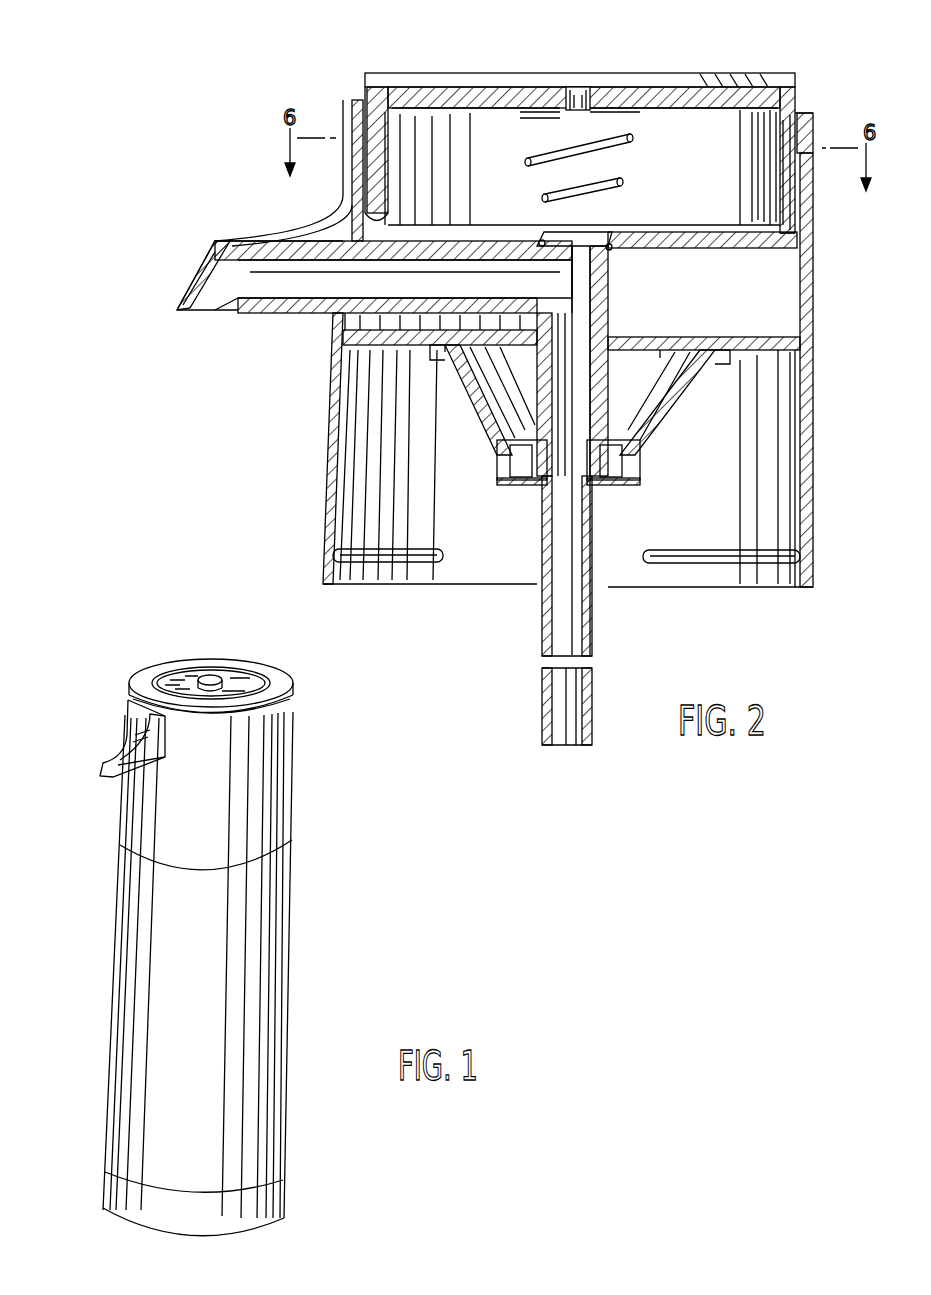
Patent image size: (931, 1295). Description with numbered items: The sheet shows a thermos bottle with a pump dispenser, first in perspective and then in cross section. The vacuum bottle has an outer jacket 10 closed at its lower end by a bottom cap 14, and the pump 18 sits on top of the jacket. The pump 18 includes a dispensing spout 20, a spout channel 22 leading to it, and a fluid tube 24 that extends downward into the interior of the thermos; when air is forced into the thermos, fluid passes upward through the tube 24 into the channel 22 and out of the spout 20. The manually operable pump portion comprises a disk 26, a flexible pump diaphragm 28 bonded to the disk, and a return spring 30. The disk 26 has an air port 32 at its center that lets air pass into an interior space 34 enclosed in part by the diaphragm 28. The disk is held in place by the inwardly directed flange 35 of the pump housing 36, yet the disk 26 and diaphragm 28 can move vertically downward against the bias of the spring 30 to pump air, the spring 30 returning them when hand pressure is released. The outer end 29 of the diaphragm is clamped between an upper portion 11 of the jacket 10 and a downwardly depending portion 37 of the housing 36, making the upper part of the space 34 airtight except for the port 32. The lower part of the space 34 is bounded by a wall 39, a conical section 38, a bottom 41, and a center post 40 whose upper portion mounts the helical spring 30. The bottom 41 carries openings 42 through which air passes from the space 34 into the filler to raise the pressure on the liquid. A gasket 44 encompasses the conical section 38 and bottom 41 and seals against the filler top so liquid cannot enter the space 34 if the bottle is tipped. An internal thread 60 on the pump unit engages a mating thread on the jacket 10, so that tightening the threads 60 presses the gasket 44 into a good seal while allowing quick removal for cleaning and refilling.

In FIG. 1, the outer jacket 10 is at (294, 940).
In FIG. 2, the upper portion of the jacket 11 is at (805, 266).
In FIG. 1, the bottom cap 14 is at (276, 1198).
In FIG. 2, the pump 18 is at (262, 198).
In FIG. 1, the pump 18 is at (308, 740).
In FIG. 2, the dispensing spout 20 is at (185, 278).
In FIG. 1, the dispensing spout 20 is at (104, 760).
In FIG. 2, the spout channel 22 is at (300, 282).
In FIG. 2, the fluid tube 24 is at (540, 638).
In FIG. 2, the disk 26 is at (700, 96).
In FIG. 1, the disk 26 is at (252, 676).
In FIG. 2, the pump diaphragm 28 is at (770, 102).
In FIG. 2, the outer end of the diaphragm 29 is at (805, 178).
In FIG. 2, the return spring 30 is at (640, 185).
In FIG. 2, the air port 32 is at (580, 92).
In FIG. 1, the air port 32 is at (208, 676).
In FIG. 2, the interior space 34 is at (507, 194).
In FIG. 2, the inwardly directed flange 35 is at (763, 85).
In FIG. 2, the pump housing 36 is at (366, 80).
In FIG. 1, the pump housing 36 is at (130, 692).
In FIG. 2, the downwardly depending portion 37 is at (812, 150).
In FIG. 1, the downwardly depending portion 37 is at (150, 672).
In FIG. 2, the conical section 38 is at (478, 400).
In FIG. 2, the wall 39 is at (760, 342).
In FIG. 2, the center post 40 is at (608, 281).
In FIG. 2, the bottom 41 is at (598, 485).
In FIG. 2, the openings 42 is at (522, 486).
In FIG. 2, the gasket 44 is at (480, 385).
In FIG. 2, the internal thread 60 is at (340, 560).